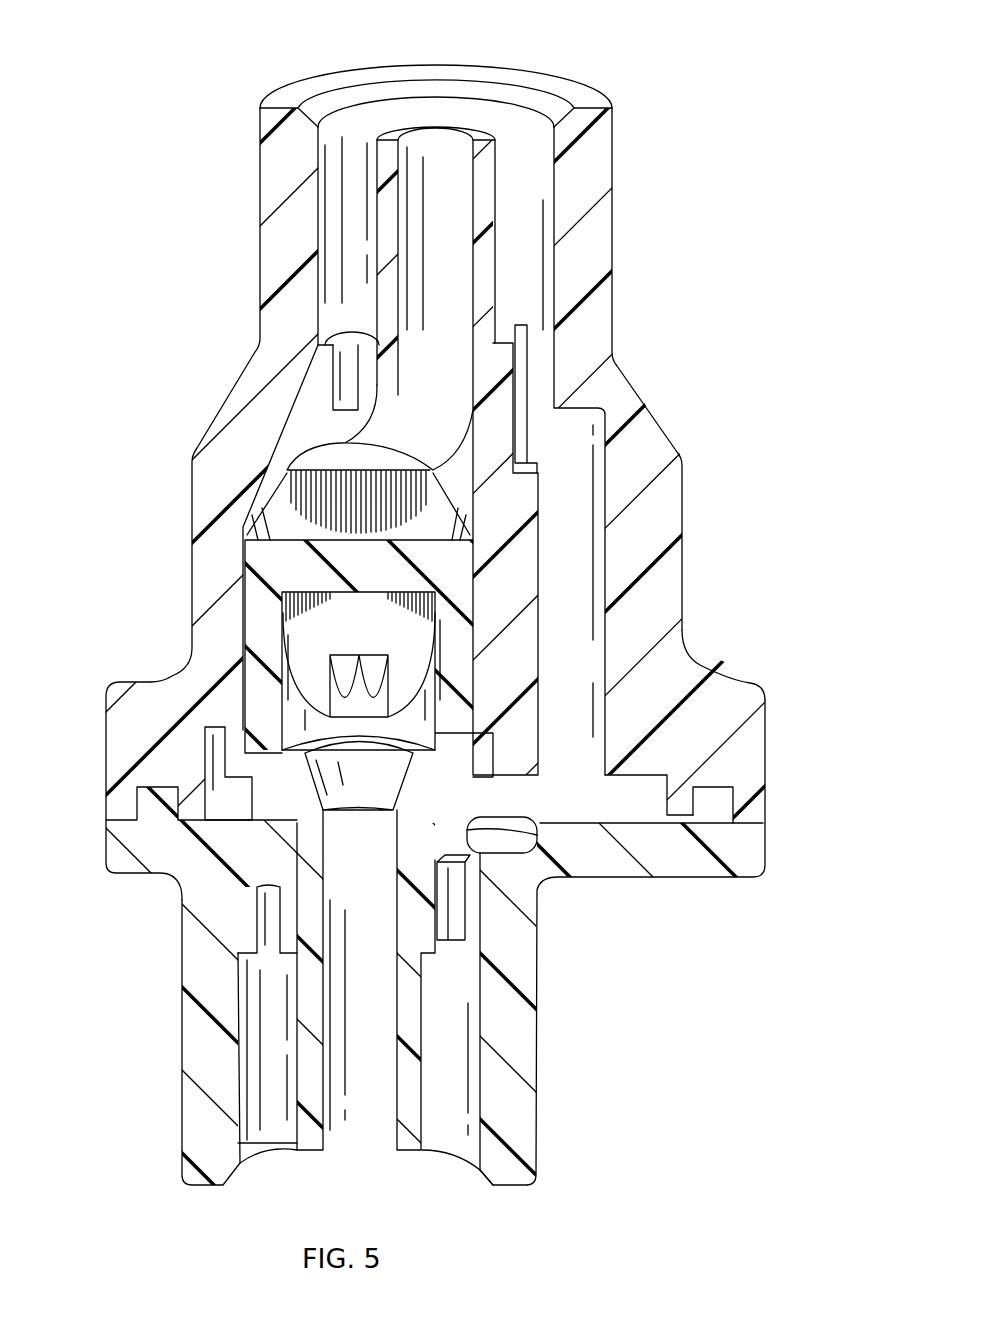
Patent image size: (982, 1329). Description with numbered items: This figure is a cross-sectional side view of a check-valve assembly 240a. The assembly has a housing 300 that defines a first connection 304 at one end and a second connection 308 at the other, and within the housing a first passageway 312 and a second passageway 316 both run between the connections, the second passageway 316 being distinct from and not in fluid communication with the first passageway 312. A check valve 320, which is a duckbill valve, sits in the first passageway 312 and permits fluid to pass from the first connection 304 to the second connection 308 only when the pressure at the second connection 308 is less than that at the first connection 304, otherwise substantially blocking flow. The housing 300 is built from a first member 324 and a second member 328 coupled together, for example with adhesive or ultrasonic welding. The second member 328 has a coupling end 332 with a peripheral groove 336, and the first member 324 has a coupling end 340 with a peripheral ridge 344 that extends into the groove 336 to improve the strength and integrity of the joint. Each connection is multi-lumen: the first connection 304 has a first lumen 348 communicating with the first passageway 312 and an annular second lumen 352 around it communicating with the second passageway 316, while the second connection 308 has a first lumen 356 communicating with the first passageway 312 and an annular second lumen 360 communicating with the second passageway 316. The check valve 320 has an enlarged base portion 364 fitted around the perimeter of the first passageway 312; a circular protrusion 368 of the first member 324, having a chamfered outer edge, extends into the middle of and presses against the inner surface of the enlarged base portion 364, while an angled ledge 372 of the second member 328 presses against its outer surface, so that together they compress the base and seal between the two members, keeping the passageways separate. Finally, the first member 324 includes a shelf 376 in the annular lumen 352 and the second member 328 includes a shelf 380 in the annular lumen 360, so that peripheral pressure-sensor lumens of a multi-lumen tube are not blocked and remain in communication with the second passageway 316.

The check-valve assembly 240a is at (230, 52).
The housing 300 is at (255, 170).
The first connection 304 is at (483, 1203).
The second connection 308 is at (551, 48).
The first passageway 312 is at (560, 275).
The second passageway 316 is at (568, 196).
The check valve 320 is at (380, 637).
The first member 324 is at (185, 1033).
The second member 328 is at (672, 503).
The coupling end 332 is at (768, 753).
The groove 336 is at (697, 790).
The coupling end 340 is at (768, 850).
The ridge 344 is at (718, 798).
The first lumen 348 is at (375, 1150).
The second lumen 352 is at (262, 1150).
The first lumen 356 is at (465, 152).
The second lumen 360 is at (330, 133).
The enlarged base portion 364 is at (203, 753).
The circular protrusion 368 is at (265, 762).
The angled ledge 372 is at (482, 718).
The shelf 376 is at (285, 950).
The shelf 380 is at (300, 312).